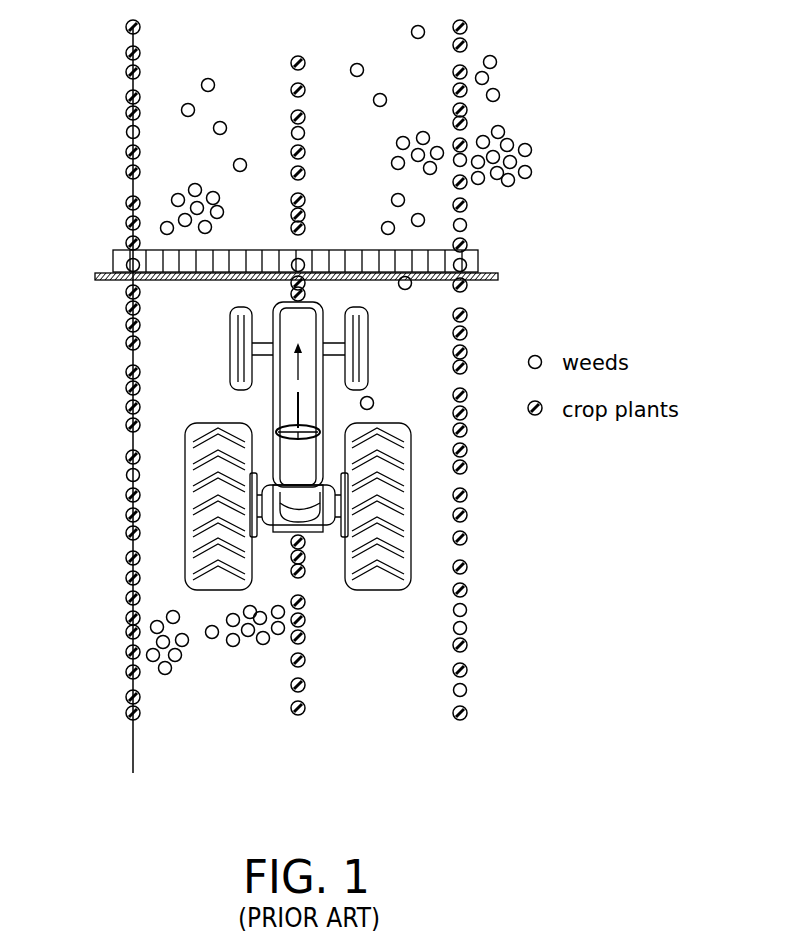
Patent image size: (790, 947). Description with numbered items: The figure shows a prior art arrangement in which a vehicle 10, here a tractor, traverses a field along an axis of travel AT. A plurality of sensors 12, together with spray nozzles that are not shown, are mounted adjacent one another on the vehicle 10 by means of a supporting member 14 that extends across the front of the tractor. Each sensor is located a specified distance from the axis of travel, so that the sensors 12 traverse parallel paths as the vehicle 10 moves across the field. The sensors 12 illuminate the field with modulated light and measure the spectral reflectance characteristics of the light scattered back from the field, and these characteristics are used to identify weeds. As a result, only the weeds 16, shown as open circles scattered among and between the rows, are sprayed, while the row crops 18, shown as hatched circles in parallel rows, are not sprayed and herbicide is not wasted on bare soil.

The vehicle 10 is at (425, 612).
The sensors 12 is at (118, 243).
The supporting member 14 is at (480, 280).
The weeds 16 is at (198, 168).
The row crops 18 is at (132, 720).